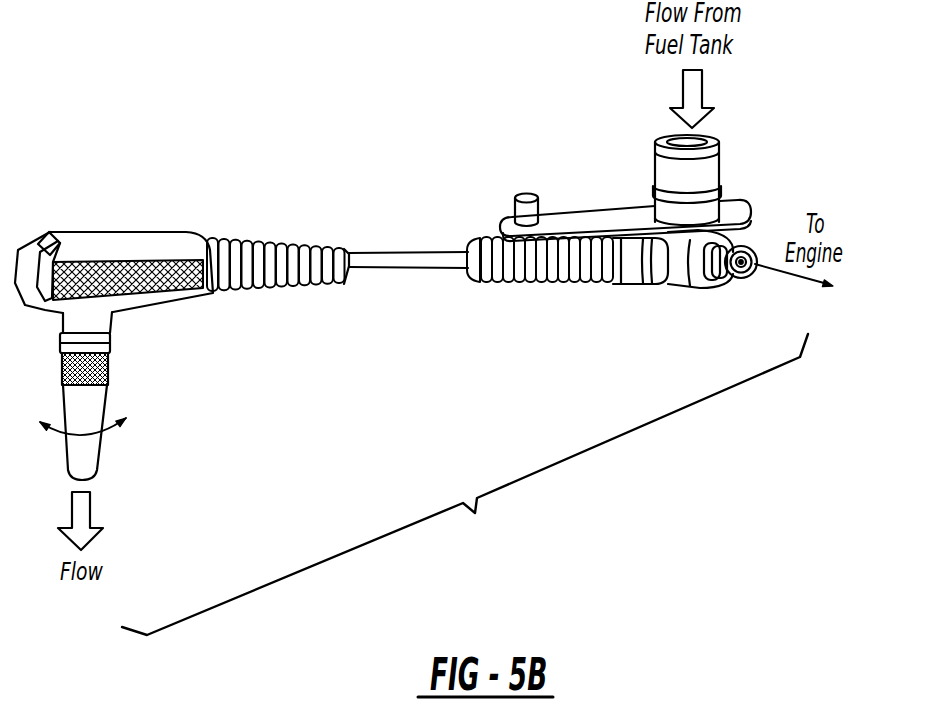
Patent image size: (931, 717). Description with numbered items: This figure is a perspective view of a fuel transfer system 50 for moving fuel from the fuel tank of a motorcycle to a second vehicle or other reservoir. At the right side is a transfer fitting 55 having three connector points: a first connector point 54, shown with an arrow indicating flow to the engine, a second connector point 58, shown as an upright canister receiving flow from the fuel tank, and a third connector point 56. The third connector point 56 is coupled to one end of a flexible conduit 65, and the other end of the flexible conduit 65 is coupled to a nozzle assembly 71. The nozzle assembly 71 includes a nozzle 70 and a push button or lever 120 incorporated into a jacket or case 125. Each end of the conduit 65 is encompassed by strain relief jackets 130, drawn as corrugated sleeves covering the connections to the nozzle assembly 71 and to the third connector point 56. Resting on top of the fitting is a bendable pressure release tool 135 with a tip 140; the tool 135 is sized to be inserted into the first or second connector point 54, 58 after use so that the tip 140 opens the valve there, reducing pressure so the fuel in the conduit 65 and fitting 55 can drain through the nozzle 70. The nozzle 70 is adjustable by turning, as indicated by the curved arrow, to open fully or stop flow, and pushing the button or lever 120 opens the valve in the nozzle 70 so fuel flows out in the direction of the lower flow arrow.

The fuel transfer system 50 is at (465, 484).
The first connector point 54 is at (740, 295).
The transfer fitting 55 is at (670, 275).
The third connector point 56 is at (622, 272).
The second connector point 58 is at (720, 138).
The flexible conduit 65 is at (413, 256).
The nozzle 70 is at (87, 412).
The nozzle assembly 71 is at (278, 348).
The push button or lever 120 is at (36, 245).
The jacket or case 125 is at (143, 280).
The strain relief jackets 130 is at (278, 300).
The pressure release tool 135 is at (595, 218).
The tip 140 is at (525, 210).